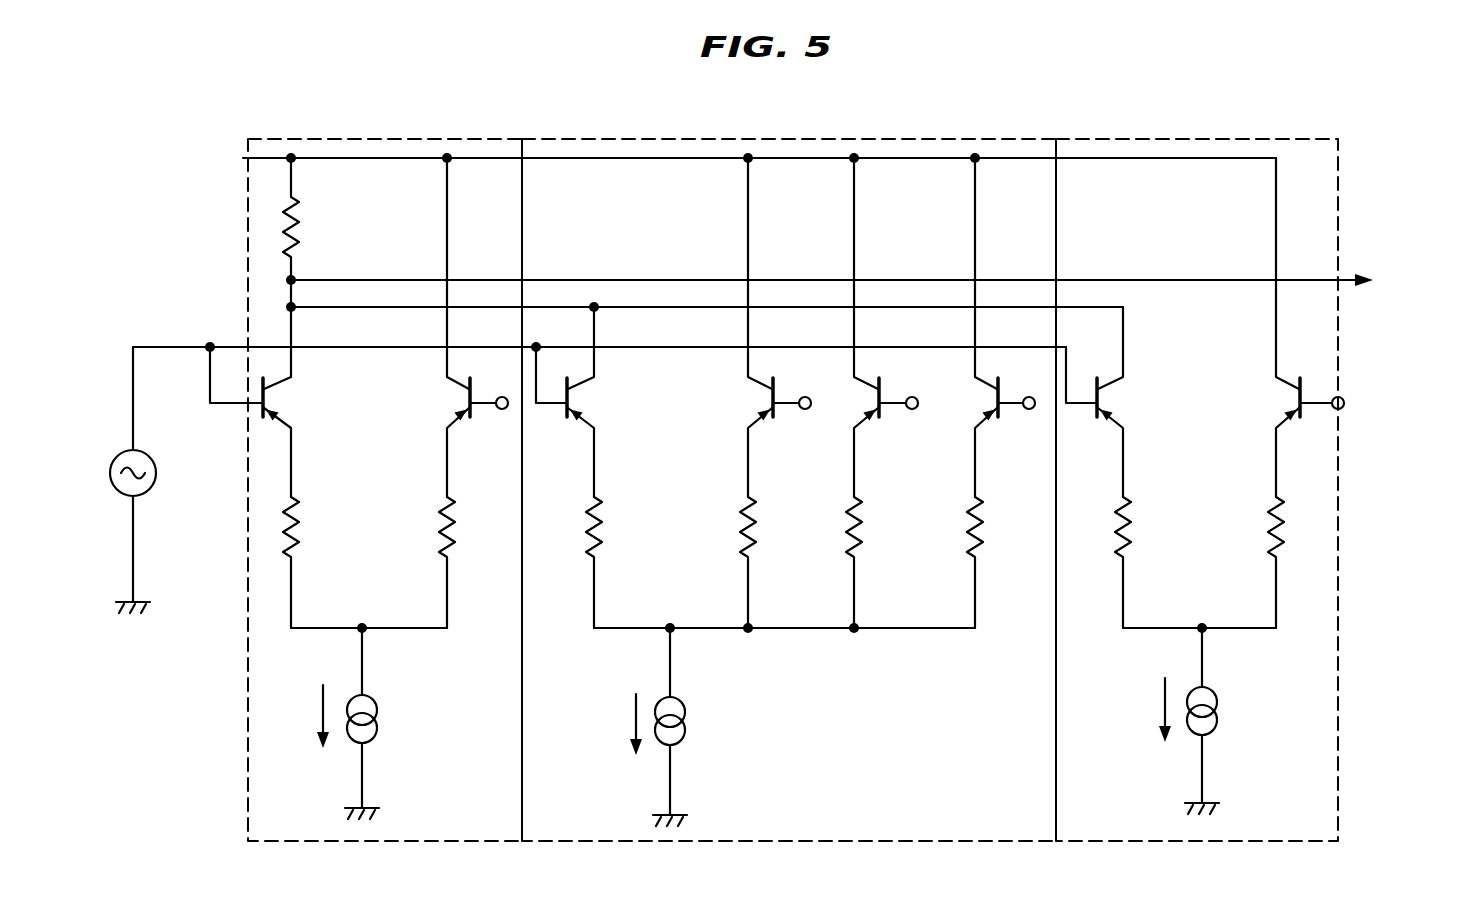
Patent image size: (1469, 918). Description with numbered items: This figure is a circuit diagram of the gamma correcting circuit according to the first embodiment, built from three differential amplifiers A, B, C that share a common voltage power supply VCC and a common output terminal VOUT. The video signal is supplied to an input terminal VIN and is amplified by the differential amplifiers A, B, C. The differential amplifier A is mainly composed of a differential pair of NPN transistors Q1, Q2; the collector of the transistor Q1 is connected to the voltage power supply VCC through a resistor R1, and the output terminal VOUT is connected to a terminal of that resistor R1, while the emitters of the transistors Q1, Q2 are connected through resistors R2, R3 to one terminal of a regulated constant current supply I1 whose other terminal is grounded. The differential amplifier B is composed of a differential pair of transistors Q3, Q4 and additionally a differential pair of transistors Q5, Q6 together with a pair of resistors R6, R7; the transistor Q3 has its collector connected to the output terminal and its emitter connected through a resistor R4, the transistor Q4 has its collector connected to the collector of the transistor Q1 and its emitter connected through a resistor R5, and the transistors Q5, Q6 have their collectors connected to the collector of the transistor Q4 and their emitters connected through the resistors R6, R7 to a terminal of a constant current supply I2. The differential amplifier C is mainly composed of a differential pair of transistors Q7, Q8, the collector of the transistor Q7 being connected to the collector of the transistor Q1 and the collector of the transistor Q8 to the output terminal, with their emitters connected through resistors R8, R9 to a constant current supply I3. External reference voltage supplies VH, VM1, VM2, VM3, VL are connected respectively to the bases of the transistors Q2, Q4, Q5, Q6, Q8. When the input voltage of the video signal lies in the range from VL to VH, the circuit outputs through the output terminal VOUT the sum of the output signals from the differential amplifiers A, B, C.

The differential amplifier A is at (373, 137).
The differential amplifier B is at (771, 137).
The differential amplifier C is at (1160, 137).
The voltage power supply VCC is at (719, 159).
The output terminal VOUT is at (872, 284).
The input terminal VIN is at (149, 484).
The external reference voltage supply VH is at (502, 409).
The external reference voltage supply VM1 is at (808, 409).
The external reference voltage supply VM2 is at (915, 409).
The external reference voltage supply VM3 is at (1032, 409).
The external reference voltage supply VL is at (1345, 403).
The resistor R1 is at (297, 210).
The resistor R2 is at (298, 518).
The resistor R3 is at (437, 525).
The resistor R4 is at (604, 519).
The resistor R5 is at (735, 530).
The resistor R6 is at (847, 530).
The resistor R7 is at (965, 530).
The resistor R8 is at (1131, 519).
The resistor R9 is at (1273, 538).
The transistor Q1 is at (270, 392).
The transistor Q2 is at (452, 403).
The transistor Q3 is at (578, 392).
The transistor Q4 is at (760, 403).
The transistor Q5 is at (866, 395).
The transistor Q6 is at (985, 395).
The transistor Q7 is at (1122, 403).
The transistor Q8 is at (1282, 397).
The constant current supply I1 is at (375, 704).
The constant current supply I2 is at (686, 712).
The constant current supply I3 is at (1222, 705).